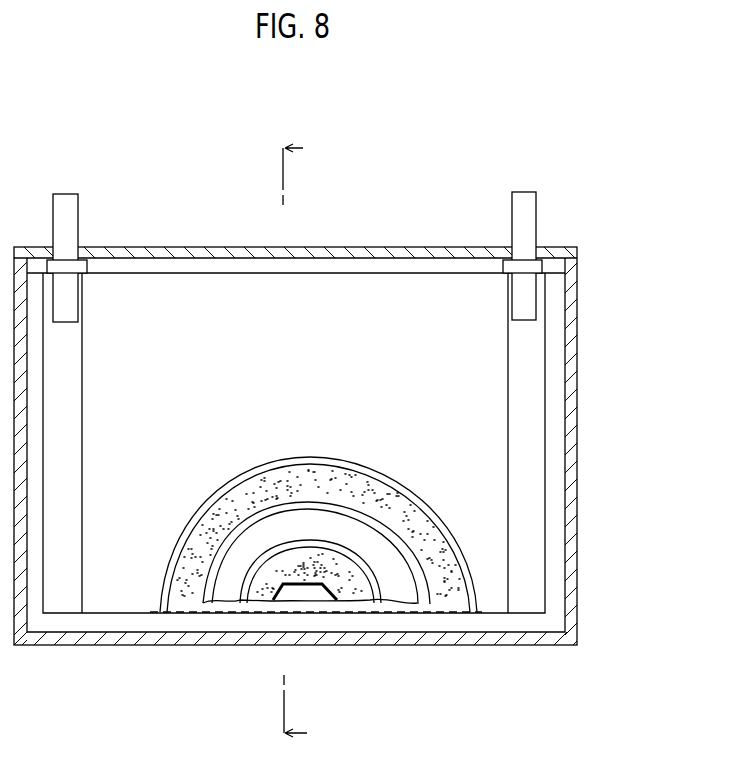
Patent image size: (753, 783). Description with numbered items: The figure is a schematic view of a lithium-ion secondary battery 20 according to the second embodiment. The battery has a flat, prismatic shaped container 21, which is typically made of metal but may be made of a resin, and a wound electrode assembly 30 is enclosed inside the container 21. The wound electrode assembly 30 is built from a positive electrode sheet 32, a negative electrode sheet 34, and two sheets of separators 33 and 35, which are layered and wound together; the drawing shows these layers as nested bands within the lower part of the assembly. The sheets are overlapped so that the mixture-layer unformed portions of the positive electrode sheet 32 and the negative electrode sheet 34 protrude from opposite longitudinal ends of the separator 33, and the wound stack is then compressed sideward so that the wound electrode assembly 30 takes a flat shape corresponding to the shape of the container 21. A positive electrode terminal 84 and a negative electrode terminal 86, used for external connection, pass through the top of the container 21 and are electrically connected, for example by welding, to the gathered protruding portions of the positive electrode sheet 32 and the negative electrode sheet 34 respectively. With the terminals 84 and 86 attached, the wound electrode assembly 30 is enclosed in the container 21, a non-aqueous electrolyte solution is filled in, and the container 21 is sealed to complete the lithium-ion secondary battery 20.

The lithium-ion secondary battery 20 is at (591, 141).
The container 21 is at (577, 373).
The wound electrode assembly 30 is at (397, 289).
The positive electrode sheet 32 is at (409, 576).
The separator 33 is at (122, 577).
The negative electrode sheet 34 is at (323, 584).
The separator 35 is at (224, 596).
The positive electrode terminal 84 is at (66, 207).
The negative electrode terminal 86 is at (523, 204).